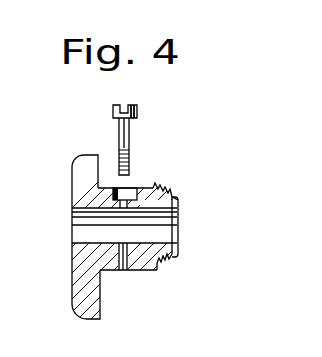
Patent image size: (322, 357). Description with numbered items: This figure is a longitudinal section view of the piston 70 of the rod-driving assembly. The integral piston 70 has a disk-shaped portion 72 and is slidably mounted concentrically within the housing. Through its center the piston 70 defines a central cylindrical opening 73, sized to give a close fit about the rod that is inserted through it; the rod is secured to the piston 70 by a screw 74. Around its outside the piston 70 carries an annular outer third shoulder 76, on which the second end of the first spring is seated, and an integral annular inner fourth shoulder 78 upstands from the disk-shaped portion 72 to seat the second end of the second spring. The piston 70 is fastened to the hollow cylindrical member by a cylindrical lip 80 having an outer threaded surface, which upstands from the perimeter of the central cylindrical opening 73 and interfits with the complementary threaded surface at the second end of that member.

The piston 70 is at (128, 280).
The disk-shaped portion 72 is at (71, 162).
The central cylindrical opening 73 is at (178, 244).
The screw 74 is at (131, 108).
The annular outer third shoulder 76 is at (99, 166).
The annular inner fourth shoulder 78 is at (153, 189).
The cylindrical lip 80 is at (184, 193).